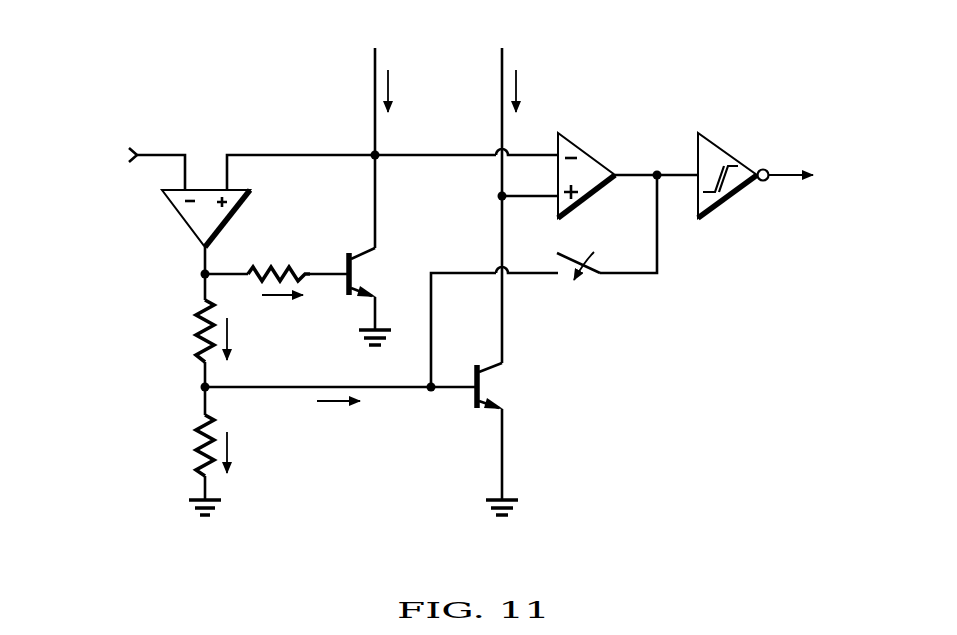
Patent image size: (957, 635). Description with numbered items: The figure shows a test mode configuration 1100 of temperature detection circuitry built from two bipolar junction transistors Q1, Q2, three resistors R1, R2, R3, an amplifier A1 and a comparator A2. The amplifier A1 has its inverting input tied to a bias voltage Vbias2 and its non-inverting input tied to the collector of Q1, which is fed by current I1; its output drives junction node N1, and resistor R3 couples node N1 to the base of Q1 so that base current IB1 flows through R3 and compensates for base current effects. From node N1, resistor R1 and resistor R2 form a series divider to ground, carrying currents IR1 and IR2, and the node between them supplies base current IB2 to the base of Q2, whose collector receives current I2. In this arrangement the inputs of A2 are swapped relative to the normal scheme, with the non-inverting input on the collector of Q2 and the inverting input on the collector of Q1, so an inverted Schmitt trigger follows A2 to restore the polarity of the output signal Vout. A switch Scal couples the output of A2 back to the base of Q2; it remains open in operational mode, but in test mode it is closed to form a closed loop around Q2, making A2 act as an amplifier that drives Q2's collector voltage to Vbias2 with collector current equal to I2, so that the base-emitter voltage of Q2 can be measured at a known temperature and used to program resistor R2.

The test mode configuration of temperature detection circuitry 1100 is at (725, 58).
The second bias voltage Vbias2 is at (126, 166).
The amplifier A1 is at (360, 200).
The junction node N1 is at (210, 273).
The resistor R1 is at (191, 357).
The resistor R2 is at (194, 465).
The resistor R3 is at (298, 259).
The bipolar junction transistor Q1 is at (376, 296).
The bipolar junction transistor Q2 is at (504, 439).
The current I1 is at (391, 148).
The current I2 is at (528, 205).
The base current IB1 is at (285, 313).
The base current IB2 is at (341, 410).
The current through resistor R1 IR1 is at (248, 339).
The current through resistor R2 IR2 is at (248, 452).
The comparator A2 is at (628, 180).
The switch Scal is at (544, 281).
The digital voltage signal Vout is at (777, 175).